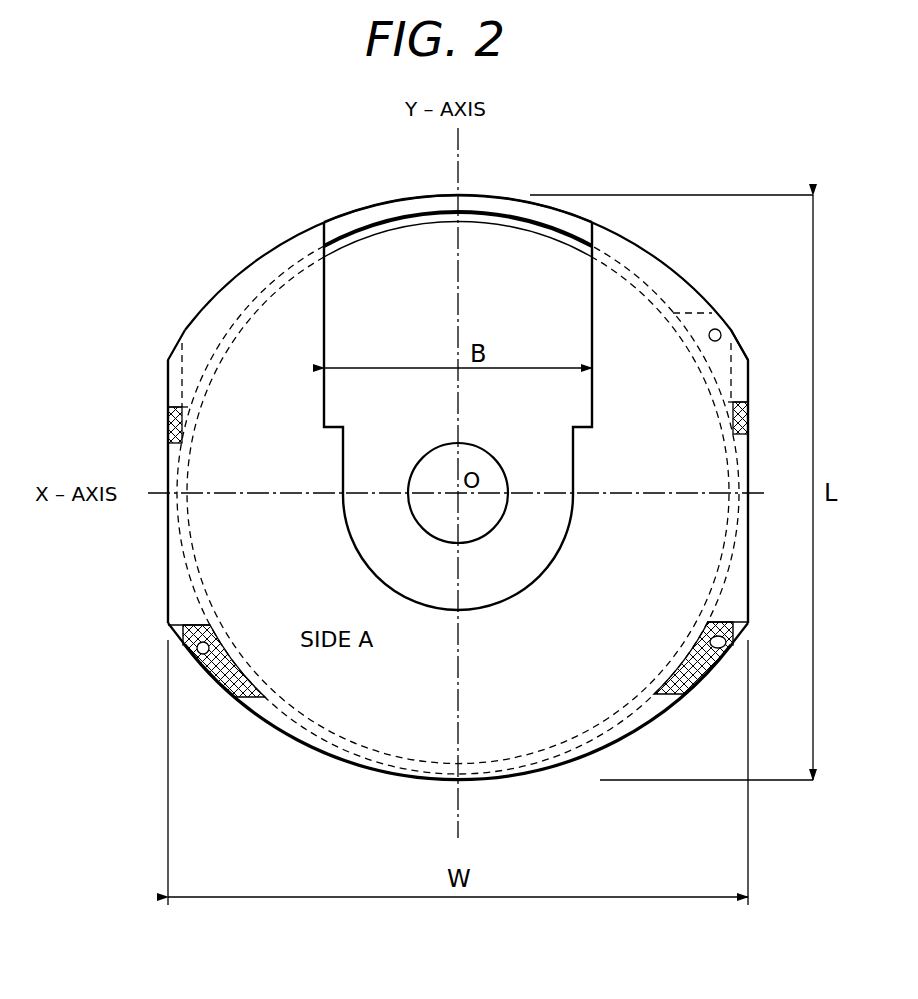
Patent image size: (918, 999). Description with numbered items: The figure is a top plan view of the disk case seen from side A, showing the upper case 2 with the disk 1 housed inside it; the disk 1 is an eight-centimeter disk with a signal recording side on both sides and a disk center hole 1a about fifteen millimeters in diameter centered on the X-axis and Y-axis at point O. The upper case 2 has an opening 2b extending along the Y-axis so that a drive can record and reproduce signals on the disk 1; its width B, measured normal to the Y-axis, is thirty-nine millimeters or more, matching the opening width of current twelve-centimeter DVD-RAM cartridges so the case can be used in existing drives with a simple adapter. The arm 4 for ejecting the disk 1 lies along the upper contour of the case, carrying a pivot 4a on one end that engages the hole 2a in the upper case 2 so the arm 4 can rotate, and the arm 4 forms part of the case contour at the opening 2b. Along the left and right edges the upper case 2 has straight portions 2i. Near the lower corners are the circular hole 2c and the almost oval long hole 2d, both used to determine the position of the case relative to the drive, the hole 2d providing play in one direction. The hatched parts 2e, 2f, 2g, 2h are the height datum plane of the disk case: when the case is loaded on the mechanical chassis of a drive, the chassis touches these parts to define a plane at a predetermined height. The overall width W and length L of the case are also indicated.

The disk main body 1 is at (410, 240).
The disk center hole 1a is at (425, 510).
The upper case body 2 is at (285, 315).
The hole 2a is at (740, 350).
The opening 2b is at (591, 322).
The hole 2c is at (190, 648).
The hole 2d is at (732, 645).
The height datum plane 2e is at (168, 418).
The height datum plane 2f is at (748, 418).
The height datum plane 2g is at (225, 680).
The height datum plane 2h is at (702, 690).
The straight portion 2i is at (168, 560).
The arm 4 is at (352, 221).
The pivot 4a is at (715, 328).